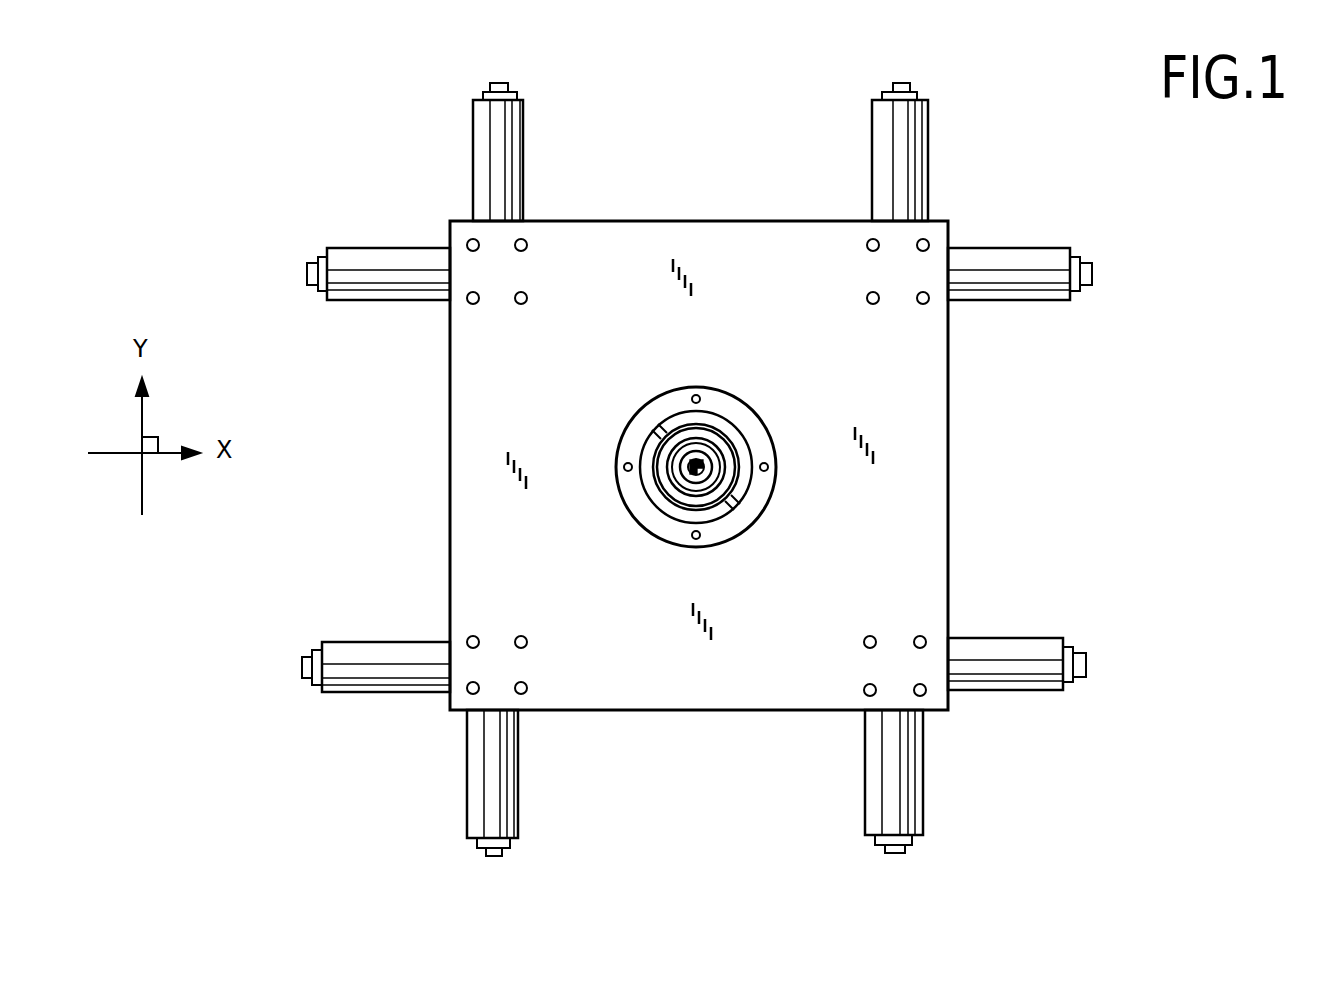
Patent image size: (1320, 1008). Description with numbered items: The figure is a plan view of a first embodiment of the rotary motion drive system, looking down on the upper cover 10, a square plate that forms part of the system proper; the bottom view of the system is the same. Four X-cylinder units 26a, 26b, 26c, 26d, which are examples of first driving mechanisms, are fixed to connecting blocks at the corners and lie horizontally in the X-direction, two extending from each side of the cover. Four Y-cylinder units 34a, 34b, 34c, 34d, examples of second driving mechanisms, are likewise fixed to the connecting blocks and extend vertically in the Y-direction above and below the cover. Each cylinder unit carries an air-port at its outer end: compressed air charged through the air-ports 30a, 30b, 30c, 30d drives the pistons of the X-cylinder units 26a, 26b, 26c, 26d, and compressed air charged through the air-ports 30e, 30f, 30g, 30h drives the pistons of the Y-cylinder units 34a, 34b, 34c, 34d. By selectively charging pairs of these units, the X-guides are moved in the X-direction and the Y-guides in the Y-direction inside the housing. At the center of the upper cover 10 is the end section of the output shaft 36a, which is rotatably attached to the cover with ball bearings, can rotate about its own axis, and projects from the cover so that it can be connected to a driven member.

The upper cover 10 is at (920, 392).
The X-cylinder unit 26a is at (1012, 260).
The X-cylinder unit 26b is at (348, 255).
The X-cylinder unit 26c is at (352, 697).
The X-cylinder unit 26d is at (1015, 647).
The air-port 30a is at (1093, 273).
The air-port 30b is at (305, 265).
The air-port 30c is at (302, 668).
The air-port 30d is at (1088, 662).
The air-port 30e is at (890, 83).
The air-port 30f is at (487, 82).
The air-port 30g is at (505, 853).
The air-port 30h is at (905, 850).
The Y-cylinder unit 34a is at (930, 150).
The Y-cylinder unit 34b is at (528, 165).
The Y-cylinder unit 34c is at (503, 782).
The Y-cylinder unit 34d is at (927, 772).
The output shaft 36a is at (700, 465).